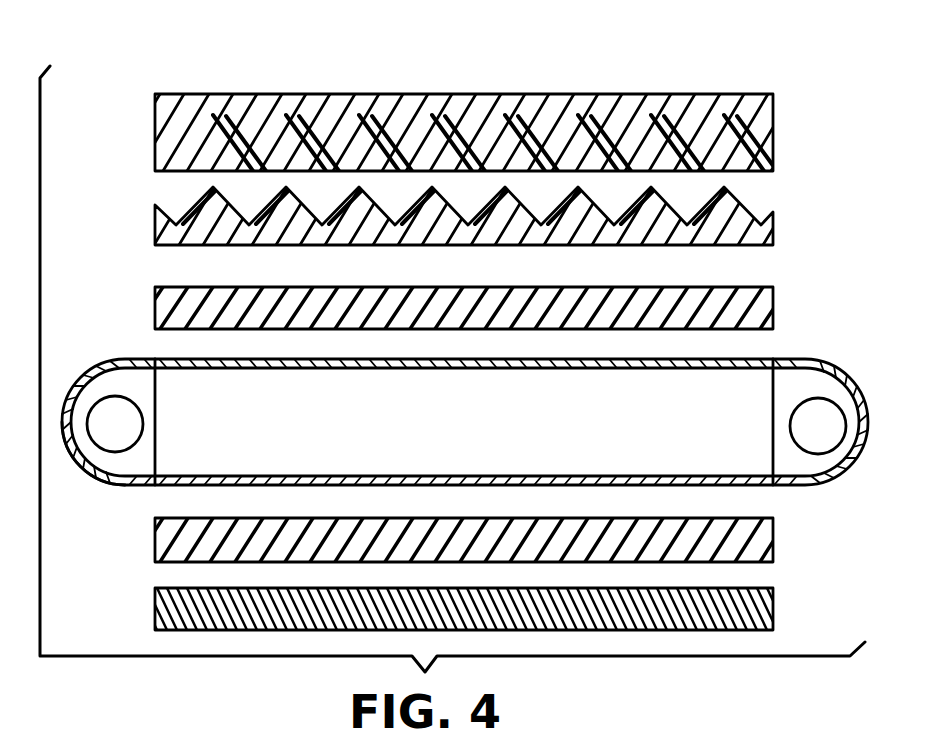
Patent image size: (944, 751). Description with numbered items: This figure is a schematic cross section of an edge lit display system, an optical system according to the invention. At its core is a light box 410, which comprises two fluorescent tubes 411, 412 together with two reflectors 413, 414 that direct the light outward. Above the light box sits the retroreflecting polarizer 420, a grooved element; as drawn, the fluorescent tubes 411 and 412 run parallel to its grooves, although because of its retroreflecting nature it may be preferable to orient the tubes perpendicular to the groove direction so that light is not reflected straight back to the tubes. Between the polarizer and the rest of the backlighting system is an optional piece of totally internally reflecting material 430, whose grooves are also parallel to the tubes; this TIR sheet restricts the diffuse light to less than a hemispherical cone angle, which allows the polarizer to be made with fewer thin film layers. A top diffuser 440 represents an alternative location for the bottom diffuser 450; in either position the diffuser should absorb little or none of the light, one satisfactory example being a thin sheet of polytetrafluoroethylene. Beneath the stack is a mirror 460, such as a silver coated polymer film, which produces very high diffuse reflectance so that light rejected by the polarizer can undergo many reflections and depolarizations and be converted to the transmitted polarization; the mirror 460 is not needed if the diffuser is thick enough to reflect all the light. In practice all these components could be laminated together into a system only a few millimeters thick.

The light box 410 is at (132, 353).
The fluorescent tube 411 is at (825, 407).
The fluorescent tube 412 is at (117, 407).
The reflector 413 is at (783, 362).
The reflector 414 is at (112, 485).
The retroreflecting polarizer 420 is at (723, 92).
The totally internally reflecting material 430 is at (738, 222).
The top diffuser 440 is at (750, 288).
The bottom diffuser 450 is at (757, 532).
The mirror 460 is at (760, 607).